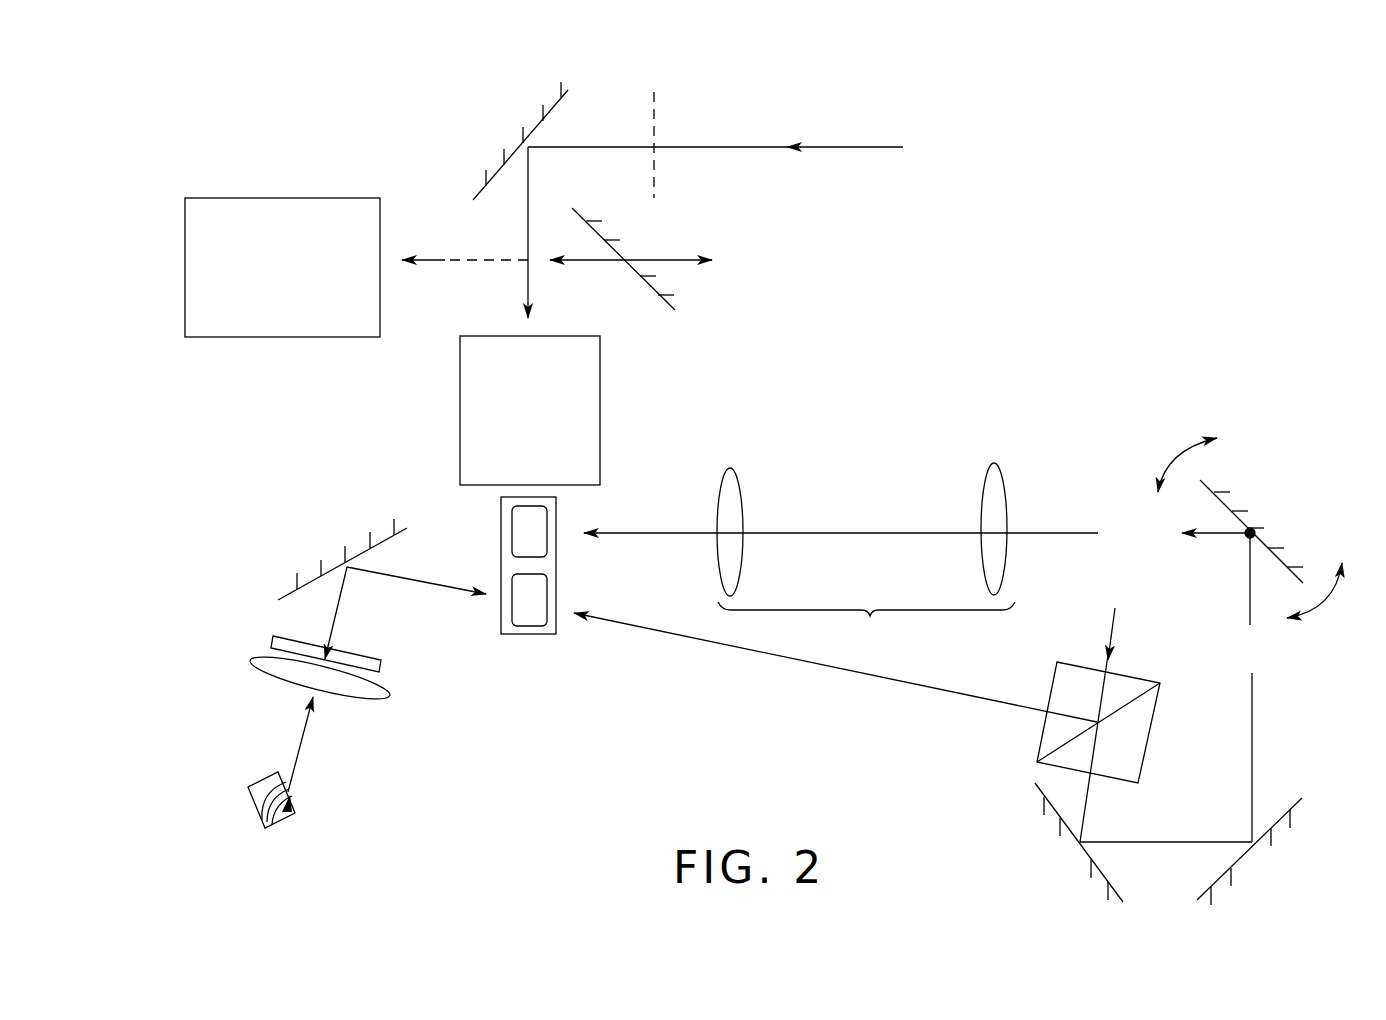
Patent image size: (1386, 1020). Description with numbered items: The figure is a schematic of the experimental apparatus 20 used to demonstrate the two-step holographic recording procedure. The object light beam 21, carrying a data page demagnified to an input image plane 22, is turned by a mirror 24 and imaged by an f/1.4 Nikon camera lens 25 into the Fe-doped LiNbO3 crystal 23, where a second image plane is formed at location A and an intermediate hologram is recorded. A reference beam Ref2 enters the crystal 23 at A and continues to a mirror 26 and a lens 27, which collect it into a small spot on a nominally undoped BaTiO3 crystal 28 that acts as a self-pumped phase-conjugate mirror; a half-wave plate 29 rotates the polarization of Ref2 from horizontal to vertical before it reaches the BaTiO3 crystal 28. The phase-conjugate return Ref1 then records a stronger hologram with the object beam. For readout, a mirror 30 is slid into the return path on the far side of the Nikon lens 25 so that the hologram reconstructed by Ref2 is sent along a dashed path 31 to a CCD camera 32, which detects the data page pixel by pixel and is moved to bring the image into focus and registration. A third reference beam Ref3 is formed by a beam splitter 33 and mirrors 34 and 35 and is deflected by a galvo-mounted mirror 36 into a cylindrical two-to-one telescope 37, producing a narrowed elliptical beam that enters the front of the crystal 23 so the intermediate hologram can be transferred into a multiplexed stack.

The experimental apparatus 20 is at (326, 101).
The object light beam 21 is at (852, 146).
The input image plane 22 is at (657, 118).
The LiNbO3 crystal 23 is at (501, 510).
The mirror 24 is at (521, 151).
The Nikon camera lens 25 is at (543, 444).
The mirror 26 is at (340, 566).
The lens 27 is at (370, 700).
The BaTiO3 crystal 28 is at (251, 809).
The half-wave plate 29 is at (384, 665).
The mirror 30 is at (664, 260).
The beam to CCD camera 31 is at (456, 271).
The CCD camera 32 is at (283, 338).
The beam splitter 33 is at (1140, 738).
The mirror 34 is at (1083, 852).
The mirror 35 is at (1258, 850).
The galvo-mounted mirror 36 is at (1246, 517).
The cylindrical telescope 37 is at (841, 556).